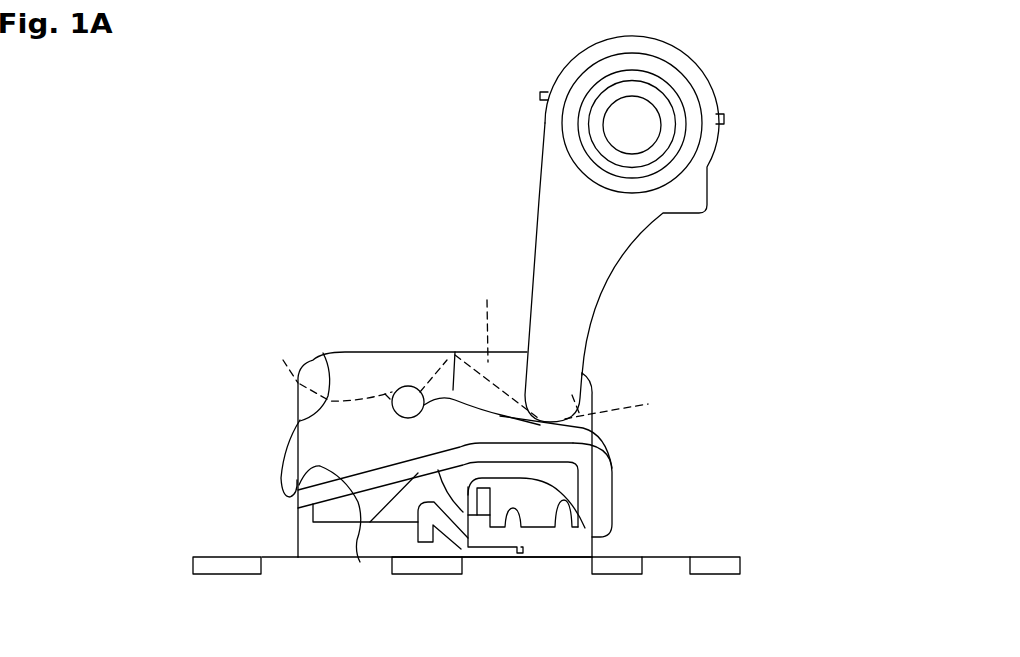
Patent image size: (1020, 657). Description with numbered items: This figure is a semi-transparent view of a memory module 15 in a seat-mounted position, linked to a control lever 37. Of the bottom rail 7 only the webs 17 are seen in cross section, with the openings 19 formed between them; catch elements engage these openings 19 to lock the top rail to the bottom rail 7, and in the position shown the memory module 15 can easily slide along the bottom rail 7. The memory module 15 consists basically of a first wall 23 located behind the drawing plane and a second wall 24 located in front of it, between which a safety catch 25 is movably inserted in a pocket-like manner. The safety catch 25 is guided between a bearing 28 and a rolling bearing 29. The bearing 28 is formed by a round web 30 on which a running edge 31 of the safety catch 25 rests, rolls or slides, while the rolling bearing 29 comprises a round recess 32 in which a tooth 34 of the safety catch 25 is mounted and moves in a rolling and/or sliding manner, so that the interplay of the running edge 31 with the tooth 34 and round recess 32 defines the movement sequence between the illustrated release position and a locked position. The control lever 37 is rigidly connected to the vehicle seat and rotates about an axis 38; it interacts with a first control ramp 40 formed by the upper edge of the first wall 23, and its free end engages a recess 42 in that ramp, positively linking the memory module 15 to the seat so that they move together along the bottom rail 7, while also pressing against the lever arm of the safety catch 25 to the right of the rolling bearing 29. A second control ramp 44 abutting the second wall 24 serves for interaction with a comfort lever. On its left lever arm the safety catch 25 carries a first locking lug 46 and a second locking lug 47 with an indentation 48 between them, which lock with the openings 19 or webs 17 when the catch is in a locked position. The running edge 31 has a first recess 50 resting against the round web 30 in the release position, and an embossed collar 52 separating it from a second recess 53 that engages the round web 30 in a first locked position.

The bottom rail 7 is at (426, 484).
The memory module 15 is at (264, 397).
The webs 17 is at (225, 567).
The openings 19 is at (327, 570).
The first wall 23 is at (391, 390).
The second wall 24 is at (323, 424).
The safety catch 25 is at (323, 356).
The bearing 28 is at (433, 387).
The rolling bearing 29 is at (480, 532).
The round web 30 is at (408, 402).
The running edge 31 is at (385, 394).
The round recess 32 is at (521, 551).
The tooth 34 is at (463, 530).
The control lever 37 is at (604, 288).
The axis 38 is at (632, 125).
The first control ramp 40 is at (486, 300).
The recess 42 is at (620, 405).
The second control ramp 44 is at (577, 487).
The first locking lug 46 is at (290, 496).
The second locking lug 47 is at (359, 548).
The indentation 48 is at (296, 500).
The first recess 50 is at (385, 394).
The collar 52 is at (455, 352).
The second recess 53 is at (492, 352).